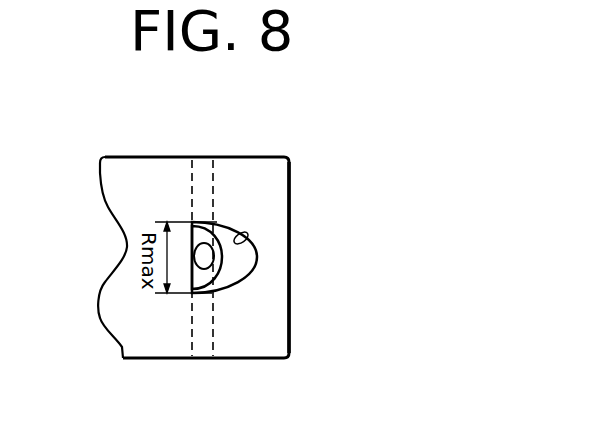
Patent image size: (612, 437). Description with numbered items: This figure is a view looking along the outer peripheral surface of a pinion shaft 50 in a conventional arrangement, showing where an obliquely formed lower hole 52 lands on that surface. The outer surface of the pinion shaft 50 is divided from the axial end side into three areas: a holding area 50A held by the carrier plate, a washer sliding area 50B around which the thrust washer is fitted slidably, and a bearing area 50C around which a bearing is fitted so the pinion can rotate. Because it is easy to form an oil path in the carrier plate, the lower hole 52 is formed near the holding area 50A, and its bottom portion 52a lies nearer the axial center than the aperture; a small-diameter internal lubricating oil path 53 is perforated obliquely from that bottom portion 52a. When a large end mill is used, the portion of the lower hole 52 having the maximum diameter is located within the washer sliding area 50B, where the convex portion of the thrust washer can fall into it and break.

The pinion shaft 50 is at (267, 348).
The holding area 50A is at (245, 172).
The washer sliding area 50B is at (202, 170).
The bearing area 50C is at (136, 172).
The lower hole 52 is at (249, 242).
The bottom portion 52a is at (205, 292).
The internal lubricating oil path 53 is at (216, 262).